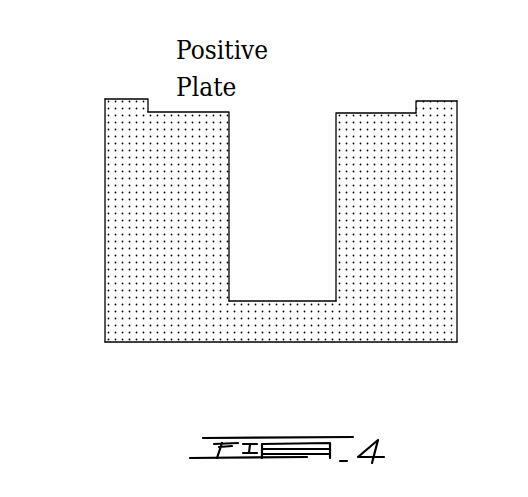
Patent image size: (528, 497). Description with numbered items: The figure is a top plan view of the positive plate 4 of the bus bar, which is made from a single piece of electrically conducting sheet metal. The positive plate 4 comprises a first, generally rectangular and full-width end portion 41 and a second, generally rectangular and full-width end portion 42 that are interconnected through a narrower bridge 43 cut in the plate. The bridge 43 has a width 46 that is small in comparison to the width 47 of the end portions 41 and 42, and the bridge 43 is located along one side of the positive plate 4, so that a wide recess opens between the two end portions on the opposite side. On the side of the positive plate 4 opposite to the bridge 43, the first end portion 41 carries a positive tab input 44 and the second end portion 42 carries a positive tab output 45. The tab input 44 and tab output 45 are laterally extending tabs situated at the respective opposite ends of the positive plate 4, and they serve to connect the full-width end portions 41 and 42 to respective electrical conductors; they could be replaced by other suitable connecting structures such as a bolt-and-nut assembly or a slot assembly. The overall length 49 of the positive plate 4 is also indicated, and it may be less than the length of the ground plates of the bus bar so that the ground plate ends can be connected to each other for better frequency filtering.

The positive plate 4 is at (313, 186).
The first end portion 41 is at (105, 147).
The second end portion 42 is at (356, 224).
The bridge 43 is at (248, 311).
The positive tab input 44 is at (130, 99).
The positive tab output 45 is at (439, 101).
The width of the bridge 46 is at (292, 256).
The width of the end portions 47 is at (496, 104).
The length of the positive plate 49 is at (456, 406).